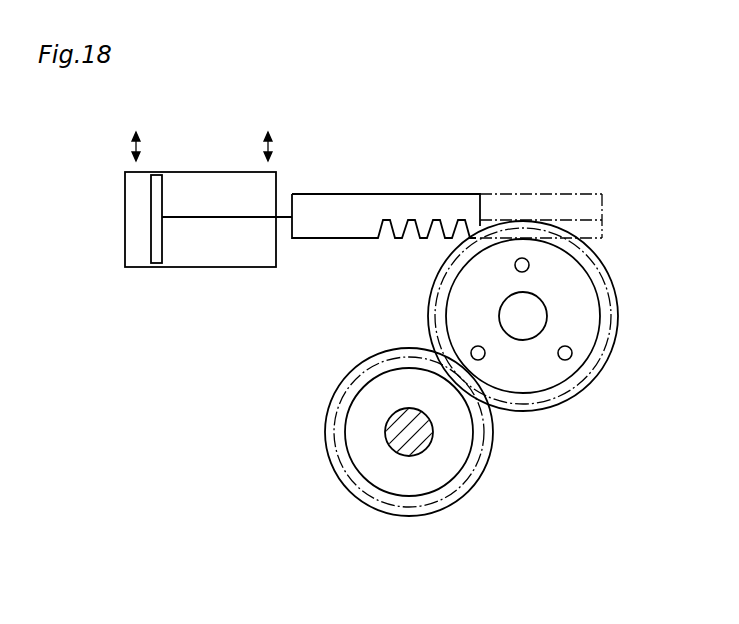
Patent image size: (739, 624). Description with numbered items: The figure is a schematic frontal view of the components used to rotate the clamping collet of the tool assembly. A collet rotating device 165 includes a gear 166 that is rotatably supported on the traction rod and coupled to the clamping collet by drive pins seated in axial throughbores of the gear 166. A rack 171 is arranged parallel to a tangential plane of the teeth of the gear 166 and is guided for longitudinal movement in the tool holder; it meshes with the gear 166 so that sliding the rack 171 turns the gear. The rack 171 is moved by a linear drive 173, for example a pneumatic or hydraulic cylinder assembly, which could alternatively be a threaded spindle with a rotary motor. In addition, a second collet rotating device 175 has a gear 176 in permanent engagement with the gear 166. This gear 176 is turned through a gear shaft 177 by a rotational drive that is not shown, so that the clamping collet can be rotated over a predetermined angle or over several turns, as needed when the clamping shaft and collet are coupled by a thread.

The collet rotating device 165 is at (325, 93).
The gear 166 is at (578, 297).
The rack 171 is at (378, 208).
The linear drive 173 is at (184, 268).
The second collet rotating device 175 is at (560, 458).
The gear 176 is at (355, 432).
The gear shaft 177 is at (414, 453).